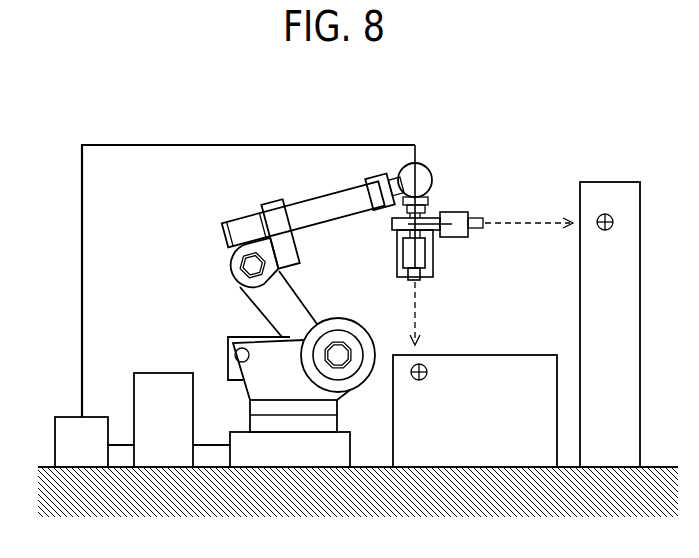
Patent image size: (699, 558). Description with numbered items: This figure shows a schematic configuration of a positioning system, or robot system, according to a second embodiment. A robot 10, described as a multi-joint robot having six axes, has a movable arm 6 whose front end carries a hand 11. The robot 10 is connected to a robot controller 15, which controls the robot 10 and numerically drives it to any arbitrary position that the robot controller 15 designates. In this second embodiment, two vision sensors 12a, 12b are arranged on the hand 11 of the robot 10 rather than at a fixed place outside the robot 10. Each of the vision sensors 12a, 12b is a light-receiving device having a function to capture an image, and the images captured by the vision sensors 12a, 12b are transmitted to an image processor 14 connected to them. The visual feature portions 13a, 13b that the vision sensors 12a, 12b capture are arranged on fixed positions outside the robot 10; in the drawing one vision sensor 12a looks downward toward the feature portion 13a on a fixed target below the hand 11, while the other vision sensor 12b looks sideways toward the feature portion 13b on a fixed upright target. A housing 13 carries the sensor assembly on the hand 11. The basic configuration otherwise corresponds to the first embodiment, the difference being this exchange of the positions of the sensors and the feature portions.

The movable arm 6 is at (317, 197).
The robot 10 is at (270, 296).
The hand 11 is at (392, 225).
The vision sensor 12a is at (419, 283).
The vision sensor 12b is at (455, 212).
The sensor housing 13 is at (433, 252).
The feature portion 13a is at (428, 368).
The feature portion 13b is at (600, 230).
The image processor 14 is at (68, 417).
The robot controller 15 is at (163, 373).